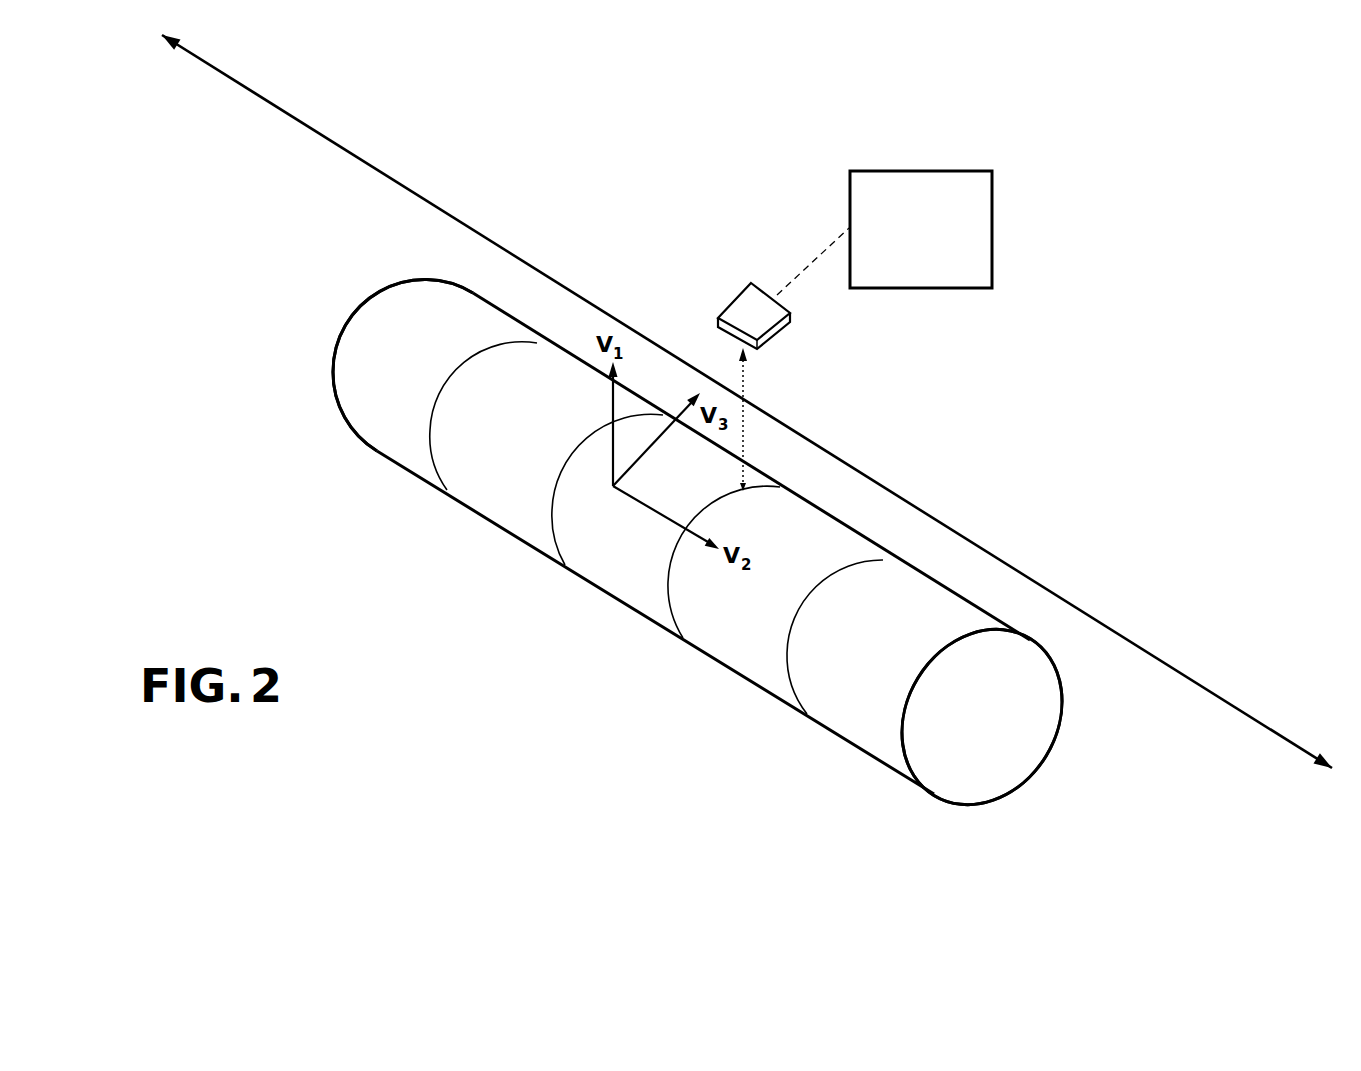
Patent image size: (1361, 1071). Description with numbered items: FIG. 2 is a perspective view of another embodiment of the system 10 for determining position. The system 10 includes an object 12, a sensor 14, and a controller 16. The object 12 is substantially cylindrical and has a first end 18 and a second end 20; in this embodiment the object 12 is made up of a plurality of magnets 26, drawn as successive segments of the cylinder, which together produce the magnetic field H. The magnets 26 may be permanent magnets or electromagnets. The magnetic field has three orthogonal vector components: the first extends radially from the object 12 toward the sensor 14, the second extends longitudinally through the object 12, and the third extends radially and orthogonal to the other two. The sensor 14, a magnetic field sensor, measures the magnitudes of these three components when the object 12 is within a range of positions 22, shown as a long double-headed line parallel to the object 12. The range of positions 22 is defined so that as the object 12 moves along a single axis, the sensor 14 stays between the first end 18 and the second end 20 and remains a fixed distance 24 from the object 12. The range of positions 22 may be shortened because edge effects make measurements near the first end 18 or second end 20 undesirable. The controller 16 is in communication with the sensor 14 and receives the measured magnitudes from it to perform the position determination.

The system 10 is at (1052, 250).
The object 12 is at (760, 724).
The sensor 14 is at (734, 297).
The controller 16 is at (877, 170).
The first end 18 is at (1020, 750).
The second end 20 is at (345, 328).
The range of positions 22 is at (813, 440).
The fixed distance 24 is at (745, 372).
The magnets 26 is at (393, 458).